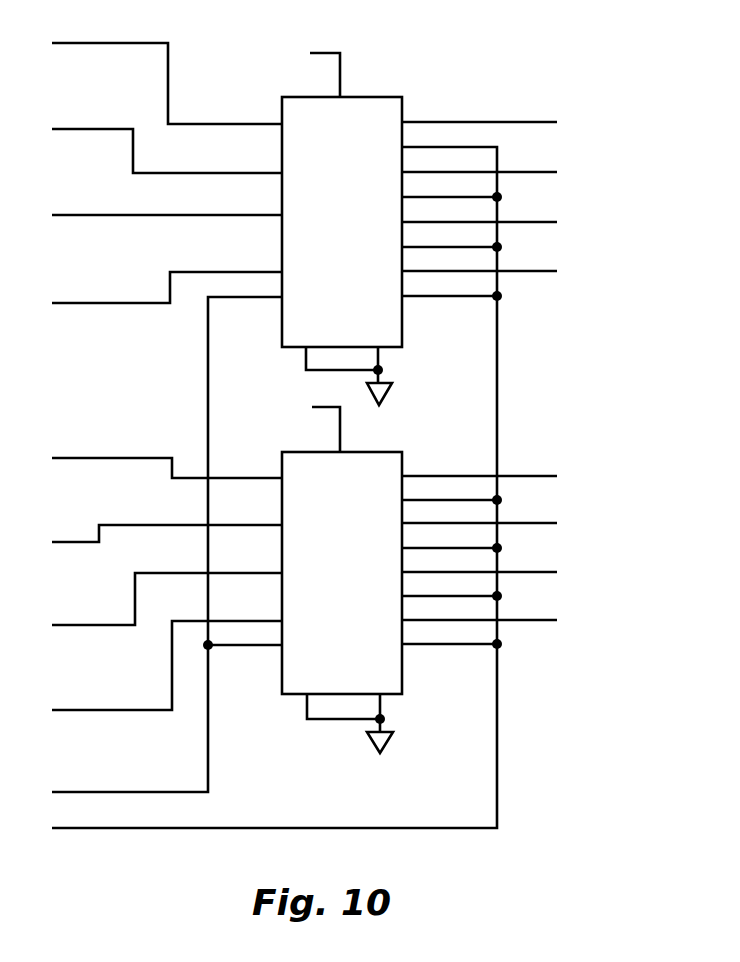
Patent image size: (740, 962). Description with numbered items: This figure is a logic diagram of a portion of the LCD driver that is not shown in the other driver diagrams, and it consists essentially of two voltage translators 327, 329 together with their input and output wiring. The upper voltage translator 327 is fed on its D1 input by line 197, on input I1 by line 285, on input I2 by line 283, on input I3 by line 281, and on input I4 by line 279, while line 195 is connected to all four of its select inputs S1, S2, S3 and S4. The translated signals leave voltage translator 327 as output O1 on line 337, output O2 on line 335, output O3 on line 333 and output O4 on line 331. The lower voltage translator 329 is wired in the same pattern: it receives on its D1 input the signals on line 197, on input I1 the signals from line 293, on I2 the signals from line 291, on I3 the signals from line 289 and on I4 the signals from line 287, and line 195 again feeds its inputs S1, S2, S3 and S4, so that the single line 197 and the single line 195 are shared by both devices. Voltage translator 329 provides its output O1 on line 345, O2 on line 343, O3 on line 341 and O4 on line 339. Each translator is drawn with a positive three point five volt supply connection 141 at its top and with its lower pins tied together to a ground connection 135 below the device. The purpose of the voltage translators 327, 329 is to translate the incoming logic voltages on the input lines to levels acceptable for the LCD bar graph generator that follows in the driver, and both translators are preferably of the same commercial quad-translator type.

The line 279 is at (78, 43).
The line 281 is at (80, 129).
The line 283 is at (82, 215).
The line 285 is at (82, 303).
The line 287 is at (80, 458).
The line 289 is at (167, 519).
The line 291 is at (65, 625).
The line 293 is at (80, 710).
The line 197 is at (80, 792).
The line 195 is at (80, 828).
The voltage translator 327 is at (352, 208).
The voltage translator 329 is at (352, 562).
The line 331 is at (536, 122).
The line 333 is at (536, 172).
The line 335 is at (536, 222).
The line 337 is at (536, 271).
The line 339 is at (536, 476).
The line 341 is at (536, 523).
The line 343 is at (536, 572).
The line 345 is at (536, 620).
The +3.5 V power supply connection 141 is at (341, 88).
The ground connection 135 is at (385, 392).